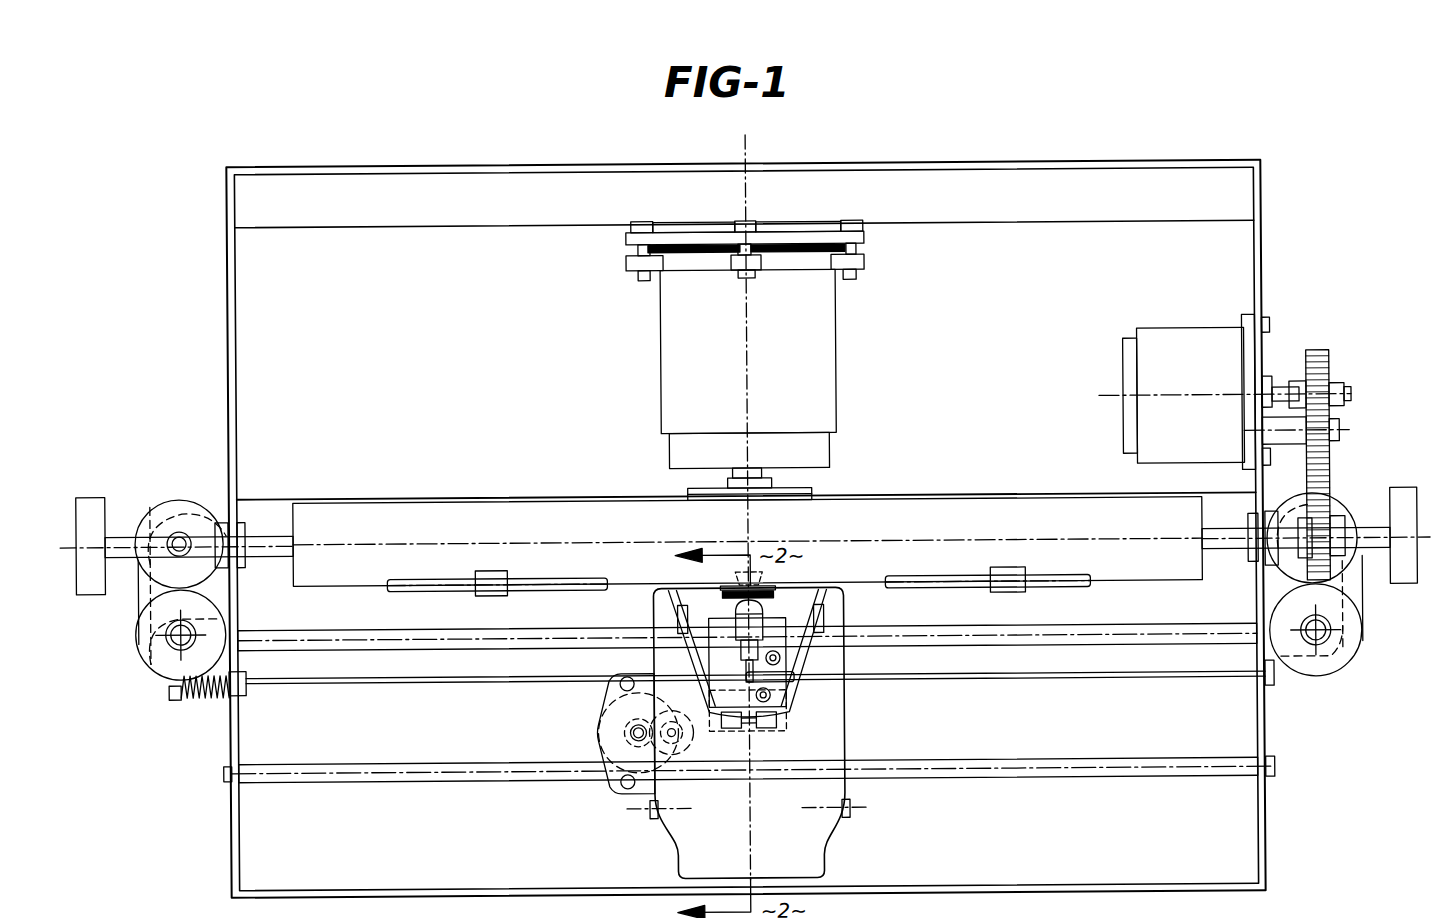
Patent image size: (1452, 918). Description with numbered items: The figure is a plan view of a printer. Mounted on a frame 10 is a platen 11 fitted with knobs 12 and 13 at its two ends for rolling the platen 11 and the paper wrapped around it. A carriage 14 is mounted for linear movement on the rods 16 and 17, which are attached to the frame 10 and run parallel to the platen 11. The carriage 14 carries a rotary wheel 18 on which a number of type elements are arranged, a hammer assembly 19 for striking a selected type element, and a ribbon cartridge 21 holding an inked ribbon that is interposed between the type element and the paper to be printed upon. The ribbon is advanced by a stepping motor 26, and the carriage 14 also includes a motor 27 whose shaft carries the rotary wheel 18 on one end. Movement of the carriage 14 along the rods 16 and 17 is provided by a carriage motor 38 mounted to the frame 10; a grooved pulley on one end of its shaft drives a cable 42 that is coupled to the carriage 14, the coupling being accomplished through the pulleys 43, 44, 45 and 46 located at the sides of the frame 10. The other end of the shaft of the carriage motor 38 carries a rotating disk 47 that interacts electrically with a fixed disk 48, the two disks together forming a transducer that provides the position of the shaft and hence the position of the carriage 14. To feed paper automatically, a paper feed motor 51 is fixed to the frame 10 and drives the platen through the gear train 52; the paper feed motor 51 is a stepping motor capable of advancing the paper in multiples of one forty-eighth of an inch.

The frame 10 is at (234, 382).
The platen 11 is at (318, 512).
The knob 12 is at (94, 494).
The knob 13 is at (1407, 488).
The carriage 14 is at (855, 735).
The rod 16 is at (1000, 768).
The rod 17 is at (1050, 630).
The rotary wheel 18 is at (800, 590).
The hammer assembly 19 is at (762, 628).
The ribbon cartridge 21 is at (716, 799).
The stepping motor 26 is at (596, 722).
The motor 27 is at (732, 670).
The carriage motor 38 is at (713, 357).
The cable 42 is at (482, 494).
The pulley 43 is at (179, 496).
The pulley 44 is at (150, 664).
The pulley 45 is at (1334, 516).
The pulley 46 is at (1319, 669).
The disk 47 is at (641, 276).
The fixed disk 48 is at (648, 258).
The paper feed motor 51 is at (1192, 372).
The gear train 52 is at (1322, 352).